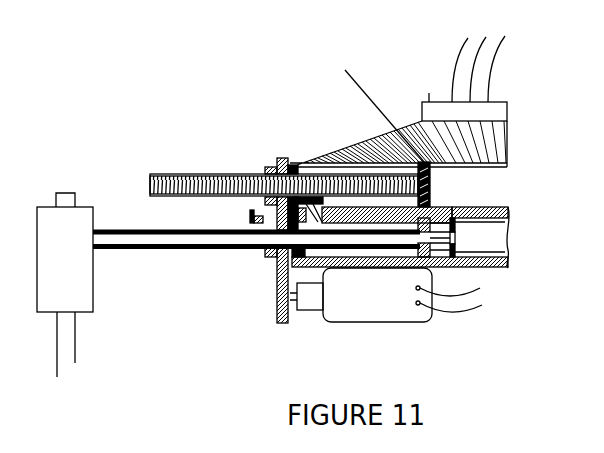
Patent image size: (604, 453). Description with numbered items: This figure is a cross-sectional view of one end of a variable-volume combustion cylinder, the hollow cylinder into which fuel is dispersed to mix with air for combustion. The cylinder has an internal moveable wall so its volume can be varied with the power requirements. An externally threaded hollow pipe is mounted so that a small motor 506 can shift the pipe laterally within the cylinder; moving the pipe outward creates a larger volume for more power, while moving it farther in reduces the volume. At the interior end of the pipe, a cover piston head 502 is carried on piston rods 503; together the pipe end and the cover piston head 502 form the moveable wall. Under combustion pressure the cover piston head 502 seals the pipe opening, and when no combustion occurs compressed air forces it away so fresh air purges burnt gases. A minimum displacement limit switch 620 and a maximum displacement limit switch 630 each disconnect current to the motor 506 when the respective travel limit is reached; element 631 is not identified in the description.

The cover piston head 502 is at (455, 252).
The piston rods 503 is at (436, 238).
The motor 506 is at (382, 323).
The minimum displacement limit switch 620 is at (250, 213).
The maximum displacement limit switch 630 is at (315, 205).
The washer 631 is at (268, 172).